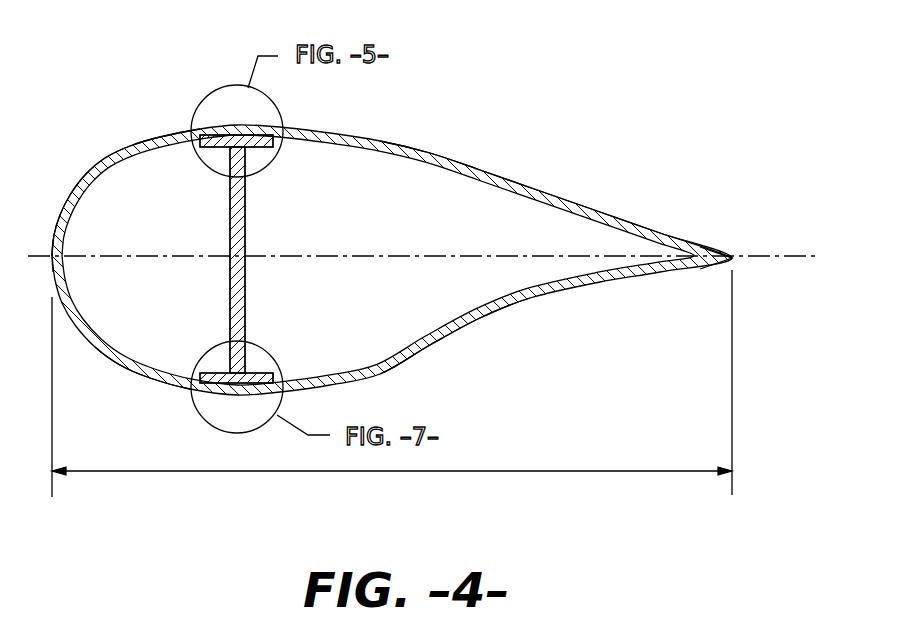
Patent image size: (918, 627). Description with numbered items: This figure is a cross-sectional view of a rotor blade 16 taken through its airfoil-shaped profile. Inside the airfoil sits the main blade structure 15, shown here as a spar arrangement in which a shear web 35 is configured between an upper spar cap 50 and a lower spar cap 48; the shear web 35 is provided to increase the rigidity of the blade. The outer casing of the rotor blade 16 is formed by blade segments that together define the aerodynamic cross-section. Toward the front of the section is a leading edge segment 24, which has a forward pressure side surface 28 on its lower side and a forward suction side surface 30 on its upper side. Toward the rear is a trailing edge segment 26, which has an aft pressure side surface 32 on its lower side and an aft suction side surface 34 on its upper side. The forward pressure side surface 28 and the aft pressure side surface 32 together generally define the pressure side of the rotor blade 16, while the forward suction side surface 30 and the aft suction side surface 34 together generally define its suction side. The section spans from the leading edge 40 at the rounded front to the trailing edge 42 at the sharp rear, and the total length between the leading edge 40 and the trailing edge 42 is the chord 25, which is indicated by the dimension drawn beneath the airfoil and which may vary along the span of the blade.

The rotor blade 16 is at (620, 90).
The main blade structure 15 is at (229, 325).
The shear web 35 is at (229, 237).
The spar cap 50 is at (252, 150).
The spar cap 48 is at (257, 367).
The leading edge segment 24 is at (78, 186).
The leading edge 40 is at (52, 257).
The forward suction side surface 30 is at (128, 145).
The aft suction side surface 34 is at (449, 155).
The trailing edge segment 26 is at (578, 201).
The trailing edge 42 is at (733, 261).
The aft pressure side surface 32 is at (455, 334).
The forward pressure side surface 28 is at (131, 372).
The chord 25 is at (507, 472).